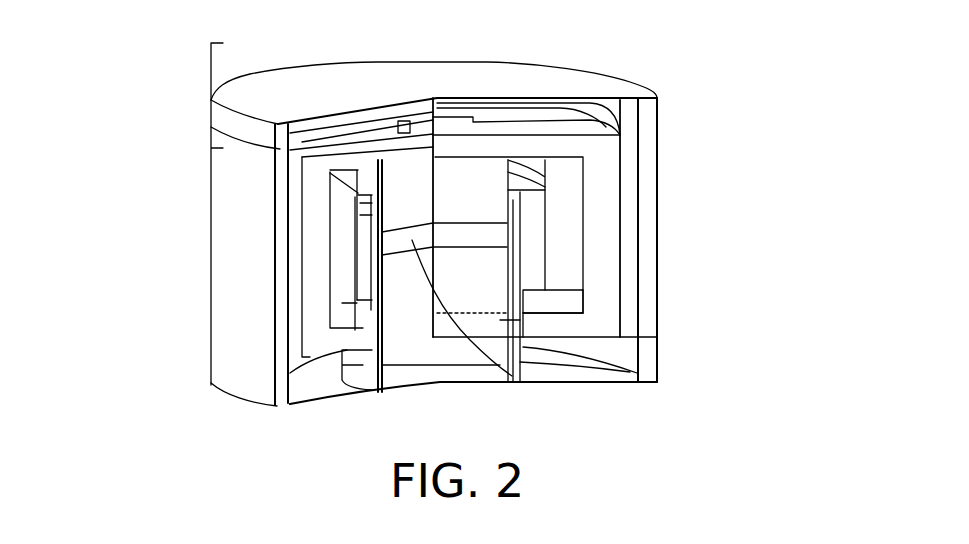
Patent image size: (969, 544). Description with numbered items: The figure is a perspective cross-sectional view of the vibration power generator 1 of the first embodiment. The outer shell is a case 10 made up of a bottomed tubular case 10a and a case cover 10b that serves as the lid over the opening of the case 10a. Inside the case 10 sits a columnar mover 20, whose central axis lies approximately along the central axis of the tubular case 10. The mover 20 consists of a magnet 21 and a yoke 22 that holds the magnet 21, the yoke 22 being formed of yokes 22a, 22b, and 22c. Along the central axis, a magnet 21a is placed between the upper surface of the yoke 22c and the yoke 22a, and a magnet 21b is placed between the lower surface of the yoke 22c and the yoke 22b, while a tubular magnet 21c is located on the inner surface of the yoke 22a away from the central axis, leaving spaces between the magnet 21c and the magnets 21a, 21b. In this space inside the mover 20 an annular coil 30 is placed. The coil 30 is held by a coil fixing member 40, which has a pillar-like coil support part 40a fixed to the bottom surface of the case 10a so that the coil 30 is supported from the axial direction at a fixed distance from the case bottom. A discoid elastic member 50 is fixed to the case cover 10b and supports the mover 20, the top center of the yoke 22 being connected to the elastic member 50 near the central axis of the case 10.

The vibration power generator 1 is at (753, 58).
The case 10 is at (118, 42).
The bottomed tubular case 10a is at (246, 179).
The case cover 10b is at (262, 97).
The mover 20 is at (795, 162).
The magnet 21 is at (733, 135).
The magnet 21a is at (478, 203).
The magnet 21b is at (478, 256).
The tubular magnet 21c is at (557, 273).
The yoke 22 is at (733, 285).
The yoke 22a is at (602, 291).
The yoke 22b is at (657, 337).
The yoke 22c is at (622, 365).
The coil 30 is at (362, 259).
The coil fixing member 40 is at (375, 213).
The coil support part 40a is at (318, 386).
The elastic member 50 is at (437, 98).